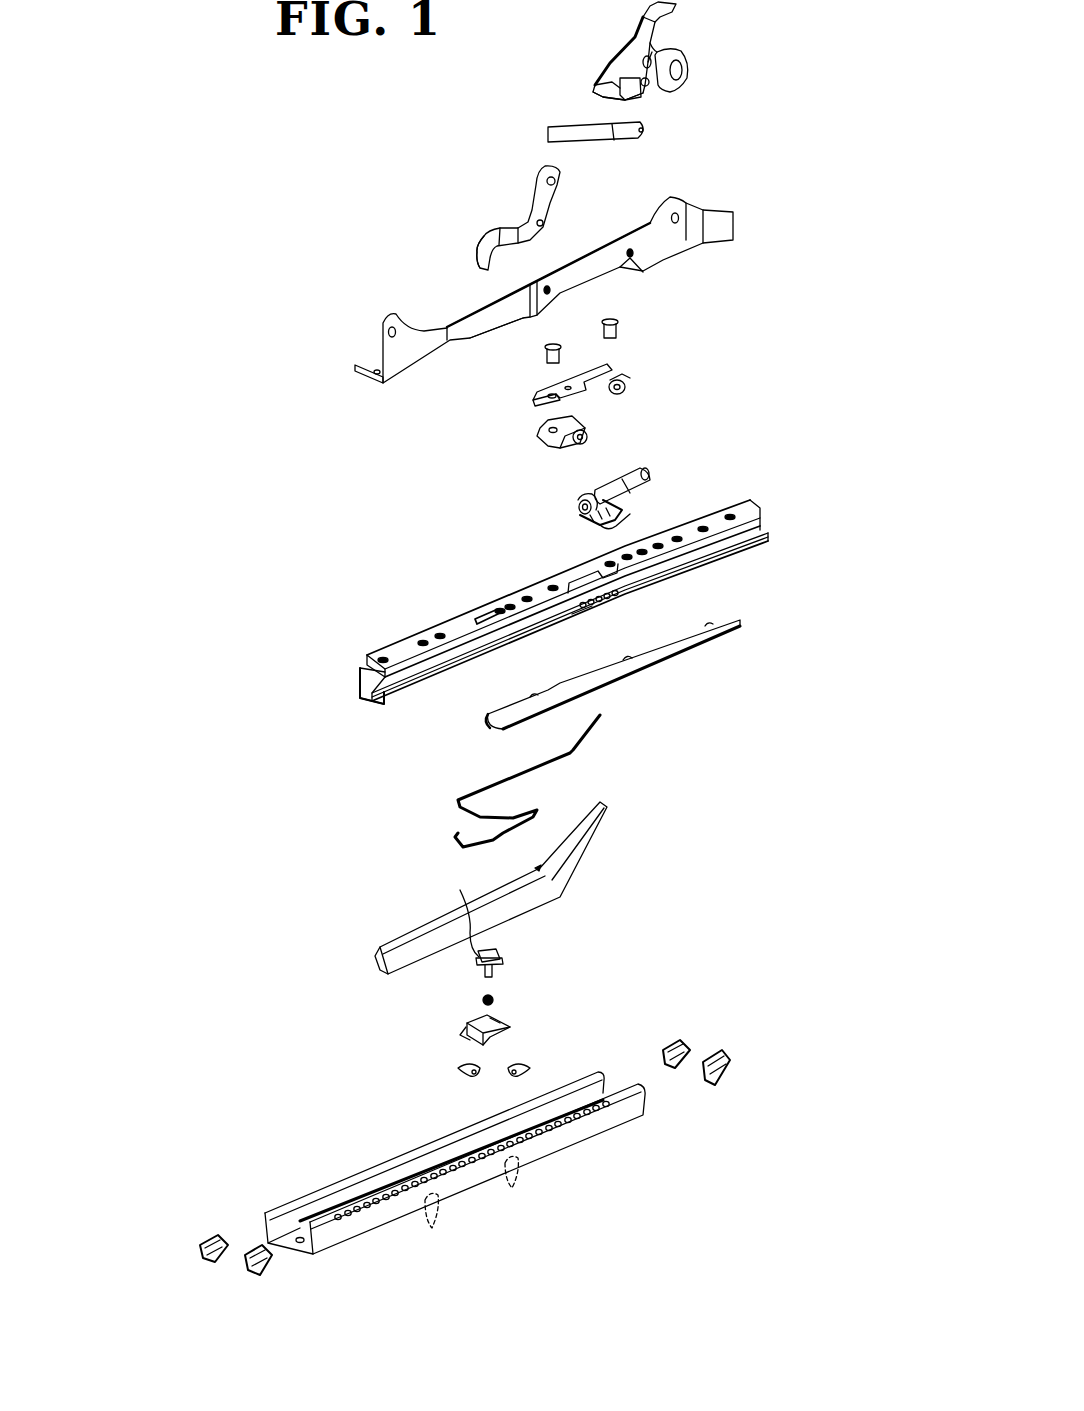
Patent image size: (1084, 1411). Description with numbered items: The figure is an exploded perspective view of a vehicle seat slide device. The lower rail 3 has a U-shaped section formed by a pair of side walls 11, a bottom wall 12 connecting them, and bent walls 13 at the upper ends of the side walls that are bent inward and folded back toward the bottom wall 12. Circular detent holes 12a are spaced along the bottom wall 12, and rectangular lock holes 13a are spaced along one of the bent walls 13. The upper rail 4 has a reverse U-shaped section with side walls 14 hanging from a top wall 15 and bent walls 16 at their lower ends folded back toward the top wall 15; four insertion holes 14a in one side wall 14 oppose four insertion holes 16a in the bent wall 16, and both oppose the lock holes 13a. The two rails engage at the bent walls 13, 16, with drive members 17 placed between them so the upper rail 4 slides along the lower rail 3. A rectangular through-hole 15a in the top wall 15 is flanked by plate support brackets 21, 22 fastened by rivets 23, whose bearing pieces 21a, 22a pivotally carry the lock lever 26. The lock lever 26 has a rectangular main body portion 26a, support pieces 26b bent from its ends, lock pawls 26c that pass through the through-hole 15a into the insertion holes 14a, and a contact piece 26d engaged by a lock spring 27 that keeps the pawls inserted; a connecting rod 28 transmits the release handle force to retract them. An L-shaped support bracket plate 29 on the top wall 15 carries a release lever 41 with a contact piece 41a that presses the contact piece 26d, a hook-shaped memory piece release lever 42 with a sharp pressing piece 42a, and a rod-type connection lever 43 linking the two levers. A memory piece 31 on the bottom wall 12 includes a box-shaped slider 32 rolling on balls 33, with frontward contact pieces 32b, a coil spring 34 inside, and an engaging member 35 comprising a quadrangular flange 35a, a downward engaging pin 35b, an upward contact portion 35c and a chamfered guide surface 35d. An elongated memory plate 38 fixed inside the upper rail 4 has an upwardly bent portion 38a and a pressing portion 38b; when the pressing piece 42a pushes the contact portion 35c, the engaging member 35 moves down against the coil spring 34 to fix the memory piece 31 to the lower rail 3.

The lower rail 3 is at (448, 1180).
The upper rail 4 is at (547, 611).
The side walls 11 is at (262, 1225).
The bottom wall 12 is at (310, 1250).
The detent holes 12a is at (469, 1212).
The bent walls 13 is at (292, 1210).
The lock holes 13a is at (510, 1165).
The side walls 14 is at (352, 668).
The insertion holes 14a is at (577, 622).
The top wall 15 is at (398, 640).
The through-hole 15a is at (590, 568).
The bent walls 16 is at (358, 694).
The insertion holes 16a is at (618, 592).
The drive member 17 is at (688, 1055).
The plate support bracket 21 is at (540, 432).
The bearing piece 21a is at (588, 432).
The plate support bracket 22 is at (612, 366).
The bearing piece 22a is at (626, 386).
The rivets 23 is at (620, 330).
The lock lever 26 is at (650, 470).
The main body portion 26a is at (575, 512).
The support pieces 26b is at (580, 492).
The lock pawls 26c is at (628, 520).
The contact piece 26d is at (655, 480).
The lock spring 27 is at (560, 760).
The connecting rod 28 is at (405, 942).
The support bracket plate 29 is at (688, 208).
The memory piece 31 is at (606, 975).
The slider 32 is at (481, 1030).
The contact piece 32b is at (462, 1036).
The balls 33 is at (456, 1070).
The coil spring 34 is at (495, 1000).
The engaging member 35 is at (495, 928).
The quadrangular flange 35a is at (476, 963).
The engaging pin 35b is at (496, 970).
The contact portion 35c is at (456, 909).
The guide surface 35d is at (498, 945).
The memory plate 38 is at (598, 680).
The bent portion 38a is at (490, 735).
The pressing portion 38b is at (615, 678).
The release lever 41 is at (678, 50).
The contact piece 41a is at (622, 96).
The memory piece release lever 42 is at (553, 208).
The pressing piece 42a is at (478, 262).
The connection lever 43 is at (597, 140).